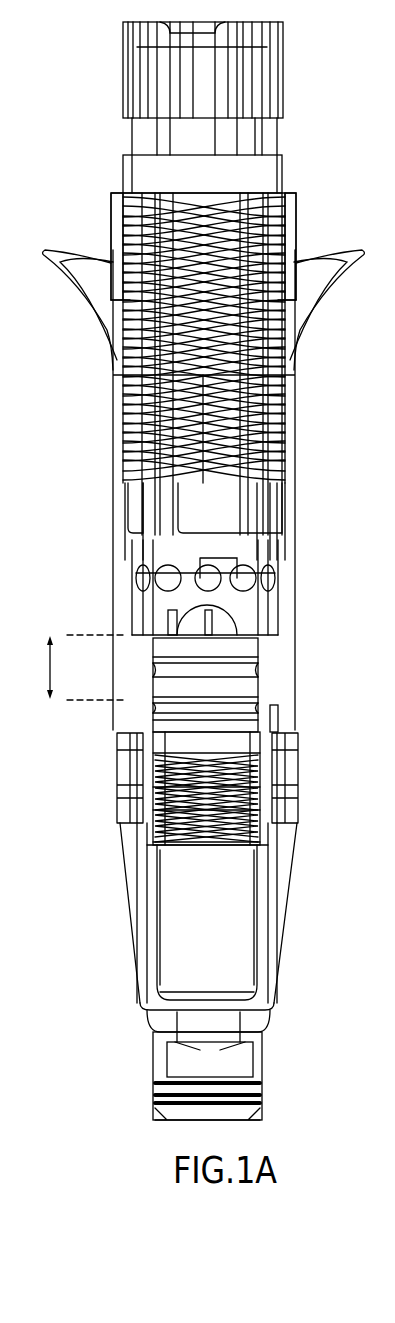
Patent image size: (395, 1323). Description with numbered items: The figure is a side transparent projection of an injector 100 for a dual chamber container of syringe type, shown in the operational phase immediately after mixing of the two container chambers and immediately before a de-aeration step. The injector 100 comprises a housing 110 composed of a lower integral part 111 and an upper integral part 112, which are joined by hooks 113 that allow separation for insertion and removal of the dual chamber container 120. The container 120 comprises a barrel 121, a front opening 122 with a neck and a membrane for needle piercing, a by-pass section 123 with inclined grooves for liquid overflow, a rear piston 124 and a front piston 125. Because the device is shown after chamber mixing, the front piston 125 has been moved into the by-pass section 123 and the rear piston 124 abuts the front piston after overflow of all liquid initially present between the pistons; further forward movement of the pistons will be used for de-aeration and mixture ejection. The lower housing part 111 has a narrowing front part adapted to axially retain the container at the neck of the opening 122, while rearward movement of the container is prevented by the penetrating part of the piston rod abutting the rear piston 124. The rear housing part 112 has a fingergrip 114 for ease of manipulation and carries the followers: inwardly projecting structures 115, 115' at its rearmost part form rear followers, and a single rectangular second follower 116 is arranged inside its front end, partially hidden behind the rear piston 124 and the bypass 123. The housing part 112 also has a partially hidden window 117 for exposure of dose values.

The injector 100 is at (358, 166).
The housing 110 is at (112, 650).
The lower integral part 111 is at (122, 892).
The upper integral part 112 is at (113, 491).
The hooks 113 is at (120, 771).
The fingergrip 114 is at (298, 303).
The inwardly projecting structures 115 is at (306, 227).
The inwardly projecting structure 115' is at (98, 229).
The second follower 116 is at (280, 722).
The window 117 is at (225, 624).
The dual chamber container 120 is at (222, 908).
The barrel 121 is at (265, 897).
The front opening 122 is at (215, 1058).
The by-pass section 123 is at (147, 832).
The rear piston 124 is at (243, 667).
The front piston 125 is at (147, 780).